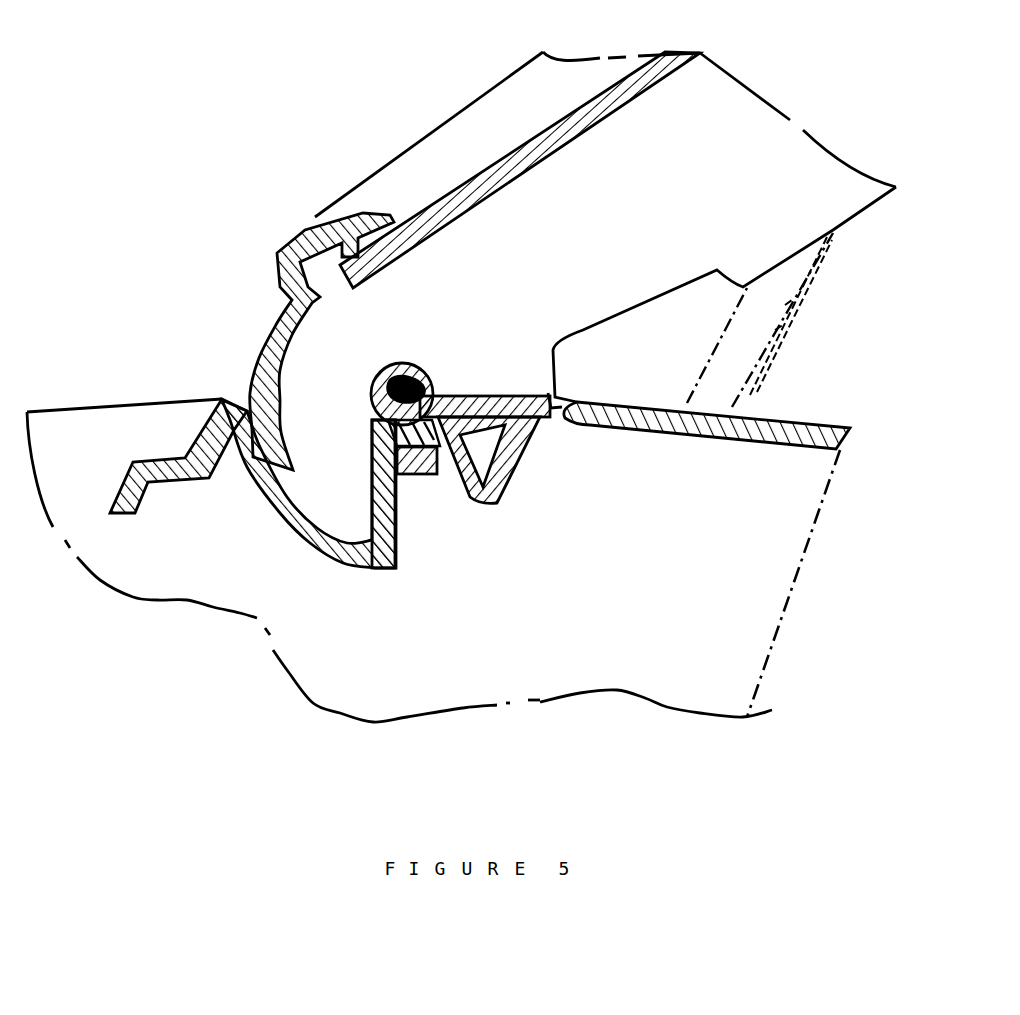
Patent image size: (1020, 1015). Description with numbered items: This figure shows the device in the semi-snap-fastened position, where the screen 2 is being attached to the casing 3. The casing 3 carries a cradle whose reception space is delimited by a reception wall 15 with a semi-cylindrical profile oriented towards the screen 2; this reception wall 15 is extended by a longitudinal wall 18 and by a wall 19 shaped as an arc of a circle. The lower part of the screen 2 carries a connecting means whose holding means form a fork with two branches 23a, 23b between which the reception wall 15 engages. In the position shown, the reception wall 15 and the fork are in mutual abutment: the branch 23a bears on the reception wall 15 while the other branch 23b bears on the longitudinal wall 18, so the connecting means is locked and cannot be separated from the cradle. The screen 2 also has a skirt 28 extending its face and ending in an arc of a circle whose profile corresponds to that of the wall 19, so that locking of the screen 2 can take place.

The screen 2 is at (722, 133).
The casing 3 is at (477, 658).
The reception wall 15 is at (430, 432).
The longitudinal wall 18 is at (380, 493).
The wall in the shape of an arc of a circle 19 is at (262, 510).
The branch of the fork 23a is at (447, 395).
The branch of the fork 23b is at (407, 480).
The skirt 28 is at (260, 343).